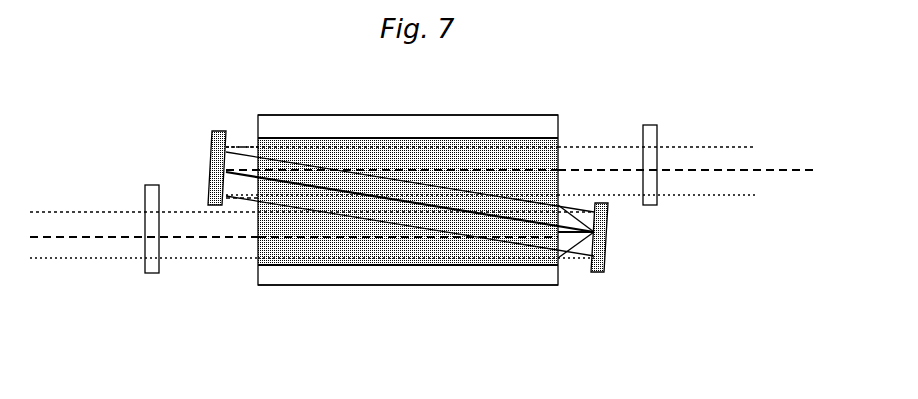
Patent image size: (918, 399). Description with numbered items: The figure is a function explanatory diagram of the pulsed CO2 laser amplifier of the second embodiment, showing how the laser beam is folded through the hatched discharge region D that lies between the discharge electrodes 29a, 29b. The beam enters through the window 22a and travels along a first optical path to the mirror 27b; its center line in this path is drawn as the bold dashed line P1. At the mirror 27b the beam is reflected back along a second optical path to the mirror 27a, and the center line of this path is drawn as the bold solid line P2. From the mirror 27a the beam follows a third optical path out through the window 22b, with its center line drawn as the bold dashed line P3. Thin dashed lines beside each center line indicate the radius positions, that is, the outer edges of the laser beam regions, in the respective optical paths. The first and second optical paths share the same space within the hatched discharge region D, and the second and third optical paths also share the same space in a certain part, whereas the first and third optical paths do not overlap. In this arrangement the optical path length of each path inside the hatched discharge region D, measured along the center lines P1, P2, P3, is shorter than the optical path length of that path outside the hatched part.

The window 22a is at (152, 273).
The window 22b is at (648, 125).
The mirror 27a is at (216, 130).
The mirror 27b is at (598, 275).
The discharge electrode 29a is at (302, 128).
The discharge electrode 29b is at (530, 285).
The discharge region D is at (514, 165).
The center line of laser beam in optical path P1 is at (302, 270).
The center line of laser beam in optical path P2 is at (392, 240).
The center line of laser beam in optical path P3 is at (434, 230).